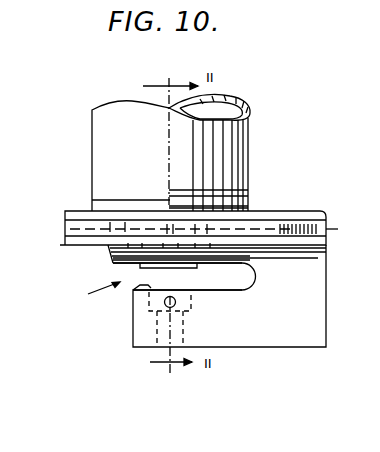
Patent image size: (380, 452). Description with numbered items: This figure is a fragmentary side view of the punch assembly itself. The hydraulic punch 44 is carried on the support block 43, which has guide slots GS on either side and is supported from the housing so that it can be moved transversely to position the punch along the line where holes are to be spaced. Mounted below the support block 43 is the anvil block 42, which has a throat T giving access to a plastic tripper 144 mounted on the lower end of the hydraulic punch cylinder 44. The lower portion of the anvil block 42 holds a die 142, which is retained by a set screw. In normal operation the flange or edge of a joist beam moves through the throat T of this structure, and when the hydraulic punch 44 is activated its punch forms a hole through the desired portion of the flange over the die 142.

The hydraulic punch 44 is at (139, 158).
The support block 43 is at (269, 212).
The guide slots GS is at (343, 231).
The anvil block 42 is at (290, 325).
The plastic tripper 144 is at (196, 270).
The die 142 is at (140, 285).
The throat T is at (94, 291).